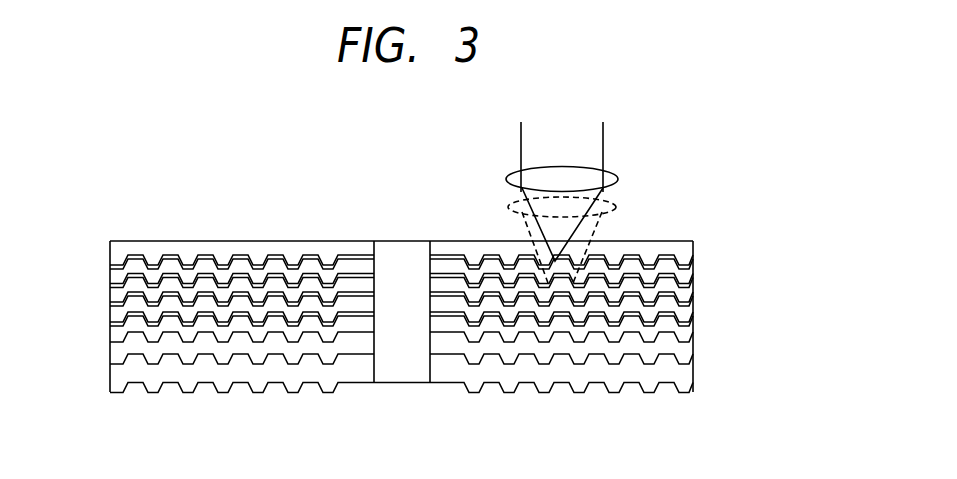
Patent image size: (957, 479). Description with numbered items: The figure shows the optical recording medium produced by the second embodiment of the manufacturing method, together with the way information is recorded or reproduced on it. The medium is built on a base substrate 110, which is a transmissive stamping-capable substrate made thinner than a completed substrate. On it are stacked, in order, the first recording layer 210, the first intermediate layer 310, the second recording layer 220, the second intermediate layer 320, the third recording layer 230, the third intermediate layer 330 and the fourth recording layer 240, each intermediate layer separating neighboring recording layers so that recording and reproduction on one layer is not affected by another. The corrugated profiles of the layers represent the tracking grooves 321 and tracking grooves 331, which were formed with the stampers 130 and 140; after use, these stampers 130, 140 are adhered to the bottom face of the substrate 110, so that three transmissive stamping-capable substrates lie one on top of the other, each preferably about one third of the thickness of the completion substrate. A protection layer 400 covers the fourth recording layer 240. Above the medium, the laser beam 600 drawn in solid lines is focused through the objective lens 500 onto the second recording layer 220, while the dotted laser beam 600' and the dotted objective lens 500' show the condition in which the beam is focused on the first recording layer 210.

The base substrate 110 is at (693, 333).
The stamper 130 is at (693, 355).
The stamper 140 is at (693, 383).
The first recording layer 210 is at (693, 323).
The second recording layer 220 is at (693, 302).
The third recording layer 230 is at (693, 281).
The fourth recording layer 240 is at (693, 262).
The first intermediate layer 310 is at (693, 313).
The second intermediate layer 320 is at (693, 292).
The third intermediate layer 330 is at (693, 271).
The tracking grooves 321 is at (130, 287).
The tracking grooves 331 is at (130, 257).
The protection layer 400 is at (693, 245).
The objective lens 500 is at (524, 200).
The objective lens 500' is at (515, 215).
The laser beam 600 is at (520, 148).
The laser beam 600' is at (511, 229).